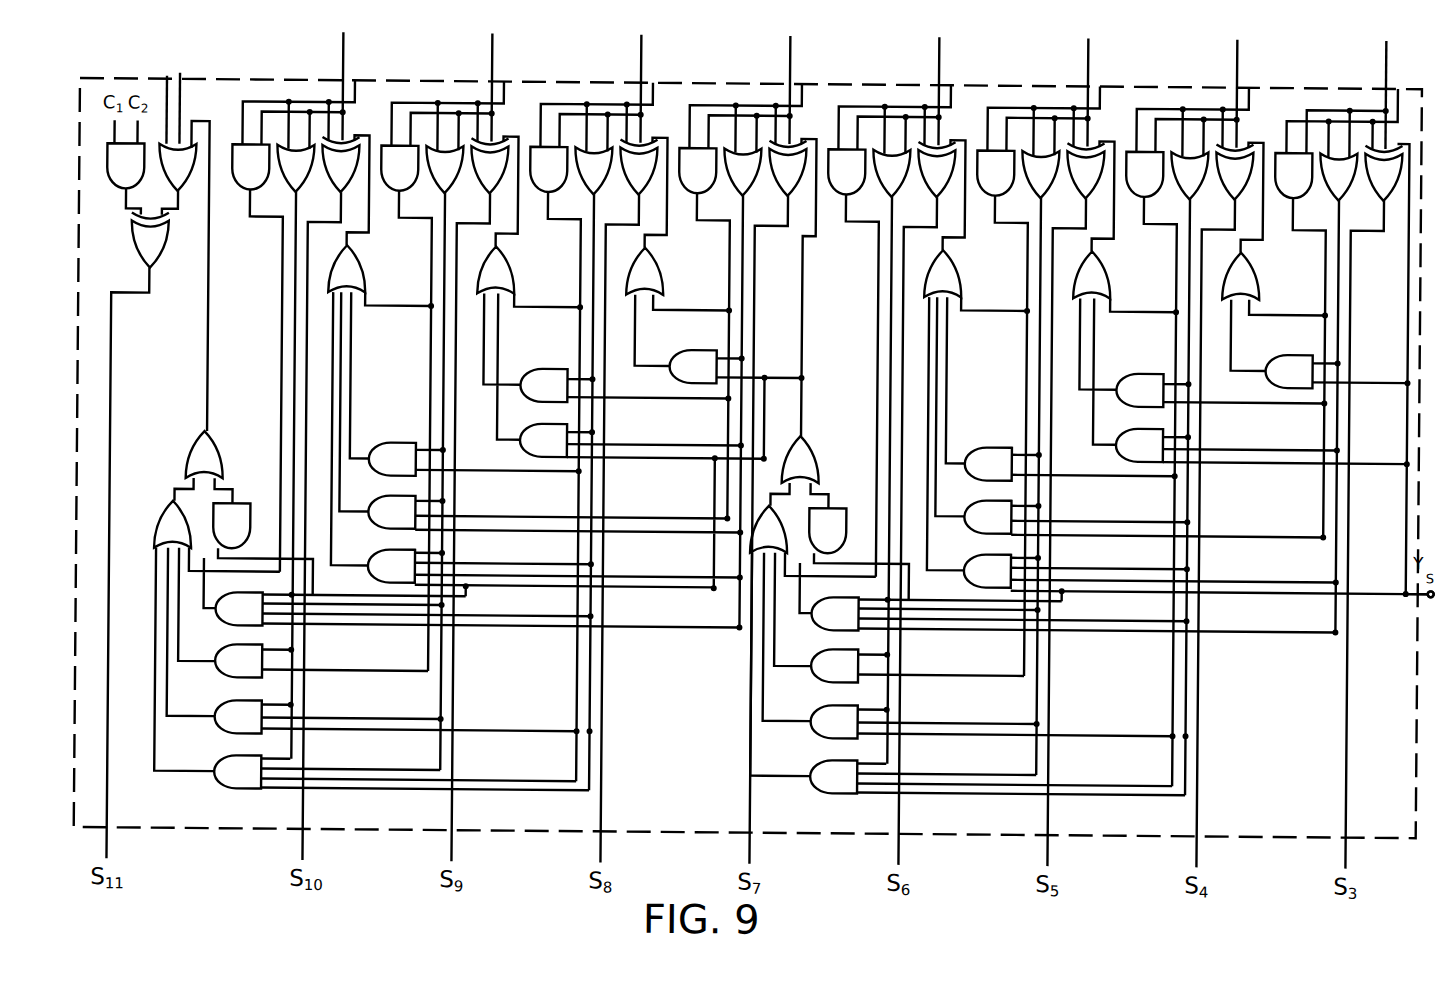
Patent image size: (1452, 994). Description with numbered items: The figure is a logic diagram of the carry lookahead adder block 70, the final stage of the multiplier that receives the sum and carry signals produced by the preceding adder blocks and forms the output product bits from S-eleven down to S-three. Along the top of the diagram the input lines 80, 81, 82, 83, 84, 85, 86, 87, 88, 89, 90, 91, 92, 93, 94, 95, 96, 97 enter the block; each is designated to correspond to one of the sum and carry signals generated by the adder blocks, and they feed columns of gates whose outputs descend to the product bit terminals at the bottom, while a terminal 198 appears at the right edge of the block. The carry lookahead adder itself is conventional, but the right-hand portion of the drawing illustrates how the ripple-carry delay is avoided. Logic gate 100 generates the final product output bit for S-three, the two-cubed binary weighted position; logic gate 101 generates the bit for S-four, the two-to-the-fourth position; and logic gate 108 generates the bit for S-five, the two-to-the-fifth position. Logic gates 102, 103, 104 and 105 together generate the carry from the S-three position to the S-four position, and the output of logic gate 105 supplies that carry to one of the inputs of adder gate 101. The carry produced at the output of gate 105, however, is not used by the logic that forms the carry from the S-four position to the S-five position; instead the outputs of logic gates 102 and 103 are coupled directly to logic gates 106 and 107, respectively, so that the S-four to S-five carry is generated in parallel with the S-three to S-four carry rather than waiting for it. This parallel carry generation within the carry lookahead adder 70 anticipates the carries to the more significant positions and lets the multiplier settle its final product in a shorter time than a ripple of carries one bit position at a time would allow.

The carry lookahead adder block 70 is at (1372, 832).
The input line 80 is at (184, 42).
The input line 81 is at (236, 48).
The input line 82 is at (343, 42).
The input line 83 is at (408, 47).
The input line 84 is at (492, 42).
The input line 85 is at (557, 47).
The input line 86 is at (641, 42).
The input line 87 is at (706, 47).
The input line 88 is at (790, 42).
The input line 89 is at (855, 47).
The input line 90 is at (939, 42).
The input line 91 is at (1004, 47).
The input line 92 is at (1088, 42).
The input line 93 is at (1153, 47).
The input line 94 is at (1237, 42).
The input line 95 is at (1302, 47).
The input line 96 is at (1386, 42).
The input line 97 is at (1444, 52).
The logic gate 100 is at (1390, 196).
The logic gate 101 is at (1220, 192).
The logic gate 102 is at (1340, 193).
The logic gate 103 is at (1295, 193).
The logic gate 104 is at (1284, 345).
The logic gate 105 is at (1255, 260).
The logic gate 106 is at (1138, 365).
The logic gate 107 is at (1124, 420).
The logic gate 108 is at (1084, 187).
The sum output terminal 198 is at (1428, 586).